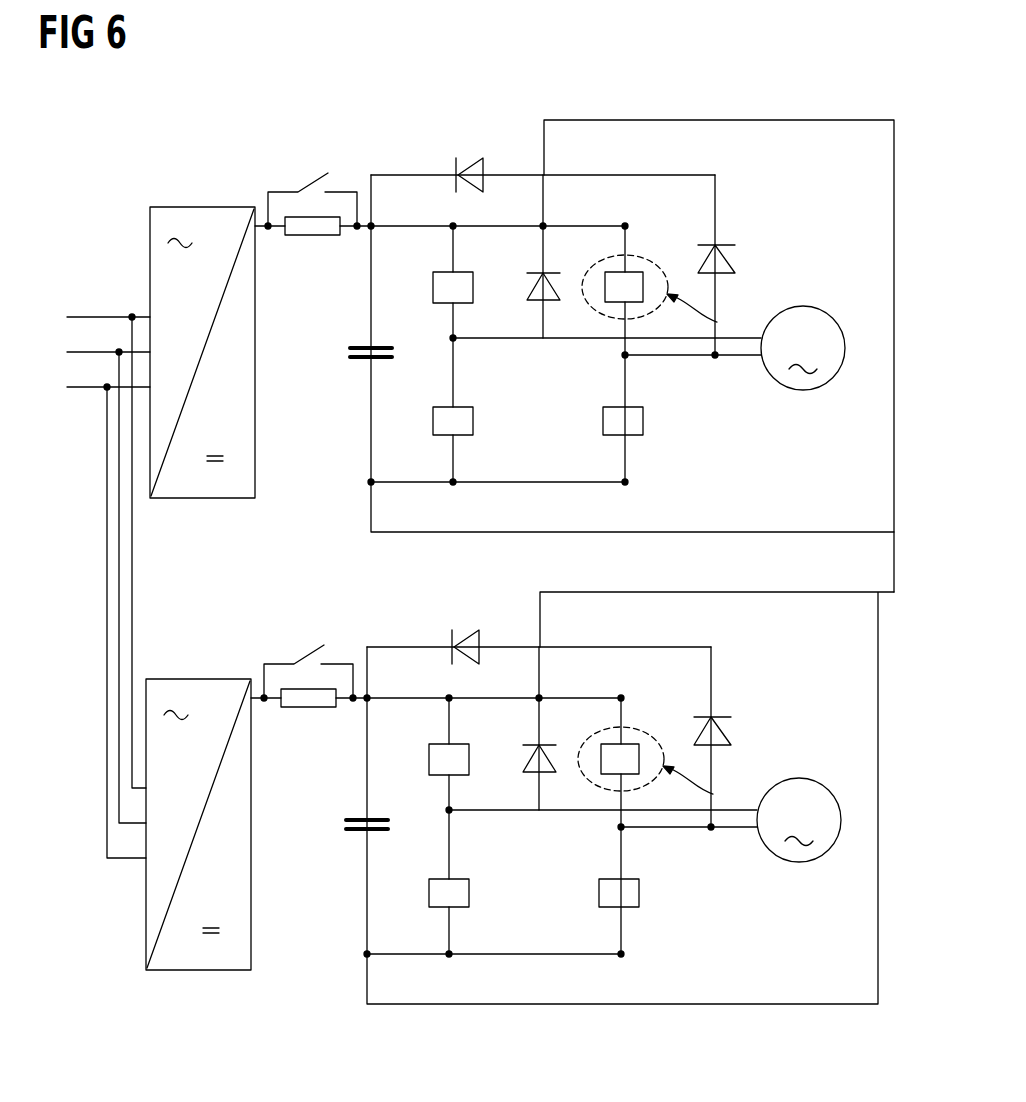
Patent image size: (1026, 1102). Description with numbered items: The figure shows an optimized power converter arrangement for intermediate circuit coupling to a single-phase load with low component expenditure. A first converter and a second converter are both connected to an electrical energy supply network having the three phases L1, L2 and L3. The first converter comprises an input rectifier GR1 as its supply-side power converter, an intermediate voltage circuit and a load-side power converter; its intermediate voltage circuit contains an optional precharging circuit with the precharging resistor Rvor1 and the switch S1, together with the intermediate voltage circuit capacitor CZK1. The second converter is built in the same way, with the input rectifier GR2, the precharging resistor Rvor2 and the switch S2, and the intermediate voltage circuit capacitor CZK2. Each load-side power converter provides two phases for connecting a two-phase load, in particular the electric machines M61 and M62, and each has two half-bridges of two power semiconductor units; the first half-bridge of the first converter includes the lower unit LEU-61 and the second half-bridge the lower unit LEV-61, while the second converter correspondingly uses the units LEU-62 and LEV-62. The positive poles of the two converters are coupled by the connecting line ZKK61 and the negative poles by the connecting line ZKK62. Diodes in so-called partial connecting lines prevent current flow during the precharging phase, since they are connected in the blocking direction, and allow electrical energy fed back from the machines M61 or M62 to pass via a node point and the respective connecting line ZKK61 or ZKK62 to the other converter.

The phase L1 is at (93, 544).
The phase L2 is at (93, 579).
The phase L3 is at (93, 614).
The input rectifier GR1 is at (203, 206).
The input rectifier GR2 is at (198, 784).
The switch S1 is at (309, 170).
The switch S2 is at (308, 636).
The precharging resistor Rvor1 is at (305, 240).
The precharging resistor Rvor2 is at (309, 739).
The intermediate voltage circuit capacitor CZK1 is at (360, 362).
The intermediate voltage circuit capacitor CZK2 is at (337, 865).
The connecting line ZKK61 is at (777, 110).
The connecting line ZKK62 is at (630, 723).
The power semiconductor unit LEU-61 is at (459, 437).
The power semiconductor unit LEU-62 is at (470, 904).
The power semiconductor unit LEV-61 is at (630, 437).
The power semiconductor unit LEV-62 is at (642, 939).
The electric machine M61 is at (801, 306).
The electric machine M62 is at (799, 781).